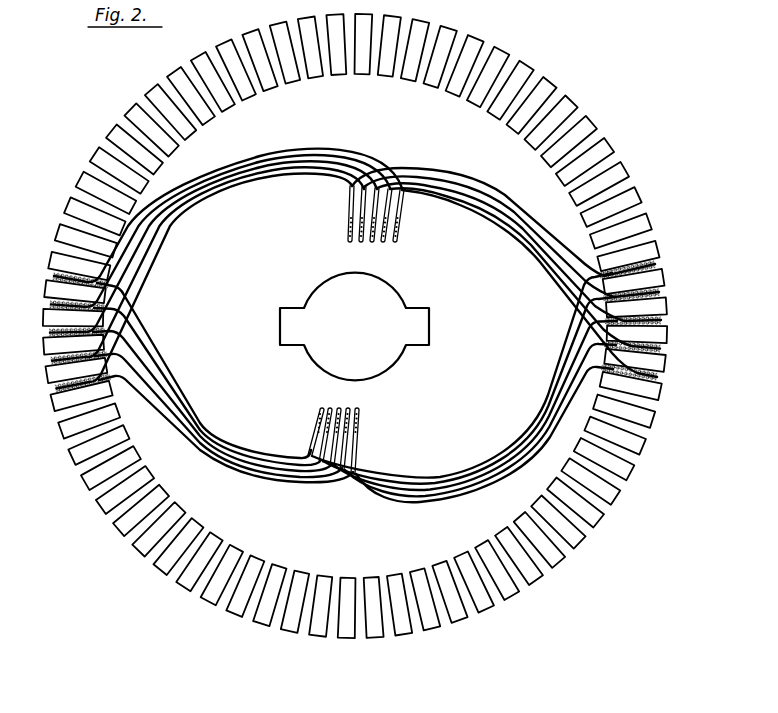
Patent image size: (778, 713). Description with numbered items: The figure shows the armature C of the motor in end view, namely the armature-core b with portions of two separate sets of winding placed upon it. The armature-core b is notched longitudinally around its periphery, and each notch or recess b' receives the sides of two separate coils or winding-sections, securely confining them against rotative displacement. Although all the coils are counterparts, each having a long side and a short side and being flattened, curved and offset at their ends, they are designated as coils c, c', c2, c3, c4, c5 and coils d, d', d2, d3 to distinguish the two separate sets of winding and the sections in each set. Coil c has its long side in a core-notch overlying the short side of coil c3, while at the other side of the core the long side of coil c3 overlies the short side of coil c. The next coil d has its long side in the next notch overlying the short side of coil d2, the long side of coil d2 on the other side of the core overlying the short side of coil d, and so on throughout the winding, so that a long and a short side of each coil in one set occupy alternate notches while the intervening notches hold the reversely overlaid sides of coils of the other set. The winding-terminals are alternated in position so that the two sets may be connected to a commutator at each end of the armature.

The armature core C is at (354, 319).
The armature-core b is at (354, 319).
The notch or recess b' is at (354, 415).
The coil c is at (369, 303).
The coil c' is at (373, 316).
The coil c2 is at (672, 253).
The coil c3 is at (393, 224).
The coil c4 is at (373, 242).
The coil c5 is at (351, 230).
The coil d is at (376, 310).
The coil d' is at (375, 322).
The coil d2 is at (385, 242).
The coil d3 is at (363, 202).